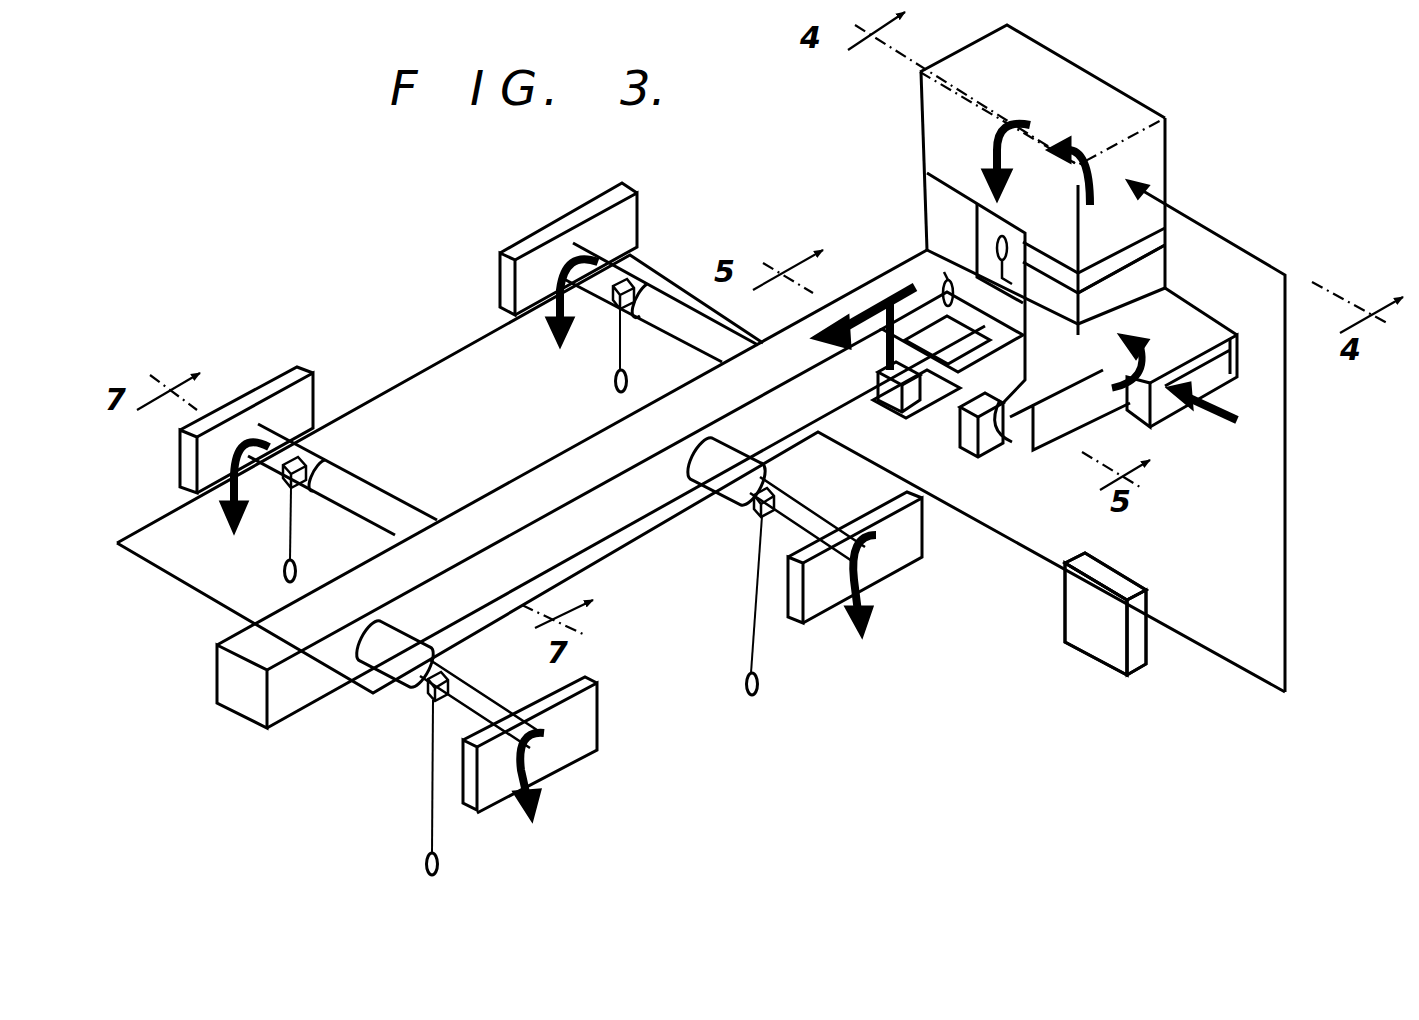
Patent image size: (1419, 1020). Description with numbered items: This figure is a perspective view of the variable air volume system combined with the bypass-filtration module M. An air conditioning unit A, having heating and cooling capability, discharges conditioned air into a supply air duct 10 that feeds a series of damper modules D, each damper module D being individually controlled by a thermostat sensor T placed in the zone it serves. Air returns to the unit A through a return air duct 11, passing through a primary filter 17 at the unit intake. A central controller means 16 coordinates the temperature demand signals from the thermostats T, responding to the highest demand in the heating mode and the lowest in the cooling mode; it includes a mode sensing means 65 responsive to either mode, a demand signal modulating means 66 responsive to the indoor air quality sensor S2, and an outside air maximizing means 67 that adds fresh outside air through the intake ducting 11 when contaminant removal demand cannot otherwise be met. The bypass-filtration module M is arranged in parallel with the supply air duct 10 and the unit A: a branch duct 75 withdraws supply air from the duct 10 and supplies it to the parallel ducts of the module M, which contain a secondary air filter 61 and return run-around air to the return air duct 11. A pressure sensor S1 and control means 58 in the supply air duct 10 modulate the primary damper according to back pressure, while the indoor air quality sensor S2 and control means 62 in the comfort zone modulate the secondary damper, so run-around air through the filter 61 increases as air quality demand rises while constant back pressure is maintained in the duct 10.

The supply air duct 10 is at (537, 463).
The return air duct 11 is at (1198, 320).
The controller means 16 is at (1098, 634).
The primary filter 17 is at (1155, 248).
The control means 58 is at (1000, 432).
The secondary air filter 61 is at (913, 420).
The control means 62 is at (878, 372).
The mode sensing means 65 is at (1087, 612).
The demand signal modulating means 66 is at (1133, 632).
The outside air maximizing means 67 is at (1113, 580).
The branch duct 75 is at (863, 360).
The air conditioning unit A is at (1135, 34).
The damper modules D is at (650, 265).
The thermostat sensors T is at (611, 382).
The bypass-filtration module M is at (966, 452).
The pressure sensor S1 is at (985, 238).
The indoor air quality sensor S2 is at (937, 274).